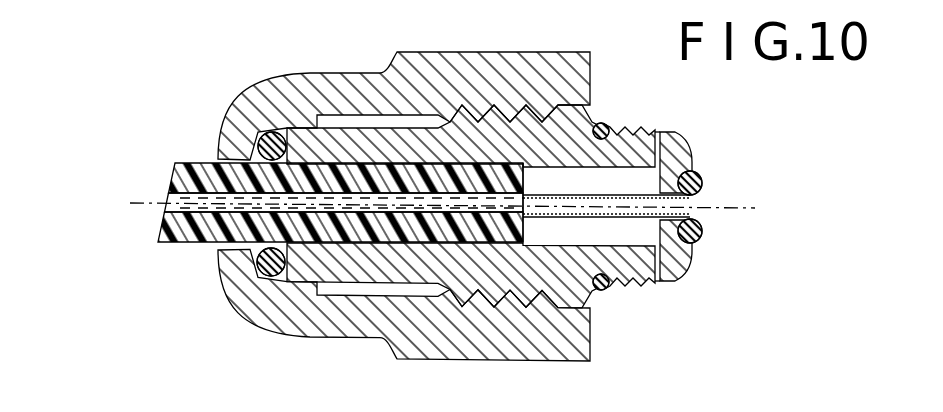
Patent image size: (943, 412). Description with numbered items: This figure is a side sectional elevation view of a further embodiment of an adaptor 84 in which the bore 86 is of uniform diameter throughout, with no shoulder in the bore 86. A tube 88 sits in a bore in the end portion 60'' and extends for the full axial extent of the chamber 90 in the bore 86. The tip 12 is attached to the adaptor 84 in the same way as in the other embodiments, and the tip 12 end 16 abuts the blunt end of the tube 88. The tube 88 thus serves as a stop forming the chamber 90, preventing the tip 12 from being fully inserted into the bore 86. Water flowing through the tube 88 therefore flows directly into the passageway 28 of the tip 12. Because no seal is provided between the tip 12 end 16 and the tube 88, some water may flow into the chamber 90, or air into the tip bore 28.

The adaptor 84 is at (540, 128).
The bore 86 is at (573, 178).
The tube 88 is at (618, 193).
The end portion 60'' is at (717, 163).
The chamber 90 is at (660, 246).
The tip end 16 is at (560, 268).
The tip 12 is at (196, 226).
The passageway 28 is at (162, 206).